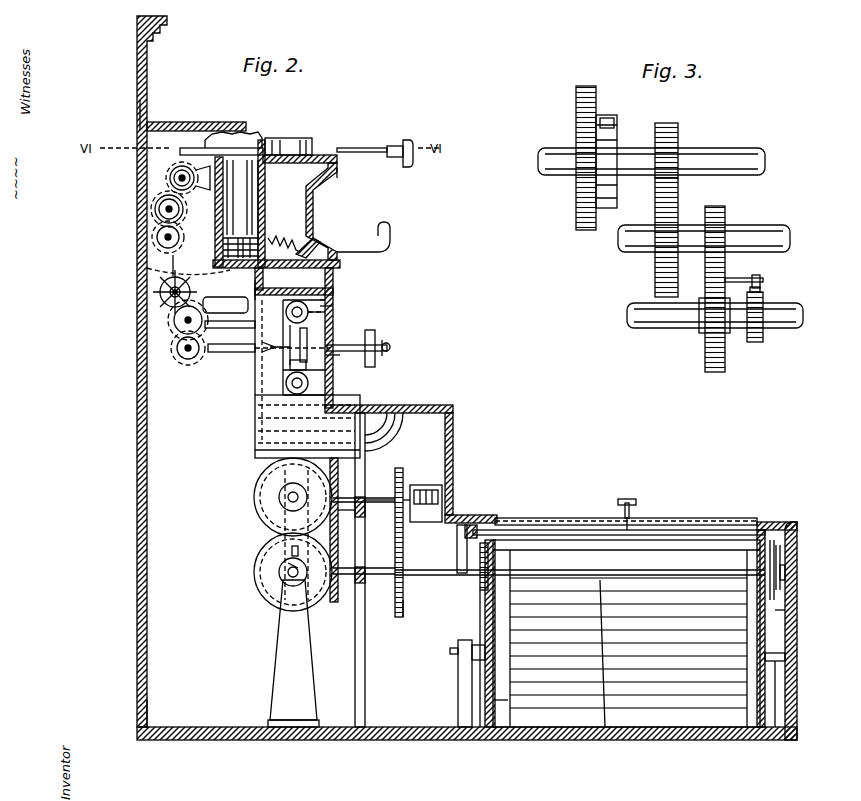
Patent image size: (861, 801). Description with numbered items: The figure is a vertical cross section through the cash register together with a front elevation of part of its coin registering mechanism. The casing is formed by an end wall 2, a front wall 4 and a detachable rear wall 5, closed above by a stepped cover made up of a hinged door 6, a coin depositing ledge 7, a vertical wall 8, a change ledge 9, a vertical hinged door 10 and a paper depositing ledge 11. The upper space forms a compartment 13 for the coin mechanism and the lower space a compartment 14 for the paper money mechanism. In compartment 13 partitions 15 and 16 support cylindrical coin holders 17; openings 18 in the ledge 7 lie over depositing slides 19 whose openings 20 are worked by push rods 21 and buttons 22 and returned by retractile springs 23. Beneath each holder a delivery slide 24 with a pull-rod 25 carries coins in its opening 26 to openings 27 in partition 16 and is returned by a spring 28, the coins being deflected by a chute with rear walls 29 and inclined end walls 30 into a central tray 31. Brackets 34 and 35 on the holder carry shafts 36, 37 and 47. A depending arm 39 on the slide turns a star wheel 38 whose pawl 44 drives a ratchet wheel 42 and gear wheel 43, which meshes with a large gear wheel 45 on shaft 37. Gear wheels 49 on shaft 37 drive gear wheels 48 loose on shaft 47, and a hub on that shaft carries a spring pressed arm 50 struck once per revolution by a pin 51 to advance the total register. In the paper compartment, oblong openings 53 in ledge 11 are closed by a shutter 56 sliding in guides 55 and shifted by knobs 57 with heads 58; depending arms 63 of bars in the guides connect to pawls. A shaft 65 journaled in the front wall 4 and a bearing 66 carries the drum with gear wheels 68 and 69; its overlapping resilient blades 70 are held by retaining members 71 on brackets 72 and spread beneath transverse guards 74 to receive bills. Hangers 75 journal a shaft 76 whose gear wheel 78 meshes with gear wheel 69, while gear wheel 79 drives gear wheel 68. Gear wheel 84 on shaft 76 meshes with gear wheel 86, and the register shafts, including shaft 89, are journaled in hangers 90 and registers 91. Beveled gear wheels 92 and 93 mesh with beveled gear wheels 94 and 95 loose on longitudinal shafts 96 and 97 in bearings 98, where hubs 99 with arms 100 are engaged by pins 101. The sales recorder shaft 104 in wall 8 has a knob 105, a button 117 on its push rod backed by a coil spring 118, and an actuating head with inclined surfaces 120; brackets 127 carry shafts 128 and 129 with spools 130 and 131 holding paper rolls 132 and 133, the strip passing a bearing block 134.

In FIG. 2, the end wall 2 is at (179, 626).
In FIG. 2, the front wall 4 is at (797, 700).
In FIG. 2, the detachable rear wall 5 is at (146, 385).
In FIG. 2, the longitudinal hinged door 6 is at (212, 125).
In FIG. 2, the coin depositing horizontal ledge 7 is at (320, 155).
In FIG. 2, the vertical wall 8 is at (320, 312).
In FIG. 2, the horizontal change ledge 9 is at (415, 405).
In FIG. 2, the vertical hinged door 10 is at (452, 470).
In FIG. 2, the horizontal paper depositing ledge 11 is at (775, 522).
In FIG. 2, the compartment 13 is at (146, 322).
In FIG. 2, the compartment 14 is at (798, 610).
In FIG. 2, the horizontal longitudinal partition 15 is at (338, 172).
In FIG. 2, the horizontal longitudinal partition 16 is at (338, 263).
In FIG. 2, the vertical coin holder 17 is at (258, 205).
In FIG. 2, the opening 18 is at (297, 150).
In FIG. 2, the depositing slide 19 is at (241, 152).
In FIG. 2, the opening 20 is at (284, 142).
In FIG. 2, the push rod 21 is at (373, 150).
In FIG. 2, the button 22 is at (410, 140).
In FIG. 2, the retractile spring 23 is at (211, 142).
In FIG. 2, the delivery slide 24 is at (298, 251).
In FIG. 2, the hook or pull-rod 25 is at (392, 236).
In FIG. 2, the opening 26 is at (255, 278).
In FIG. 2, the opening 27 is at (283, 270).
In FIG. 2, the retractile spring 28 is at (279, 242).
In FIG. 2, the rear wall 29 is at (258, 385).
In FIG. 2, the inclined end wall 30 is at (258, 431).
In FIG. 2, the central pocket or tray 31 is at (382, 430).
In FIG. 2, the bracket 34 is at (200, 176).
In FIG. 2, the bracket 35 is at (197, 238).
In FIG. 2, the shaft 36 is at (174, 181).
In FIG. 3, the shaft 36 is at (740, 153).
In FIG. 2, the shaft 37 is at (166, 209).
In FIG. 3, the shaft 37 is at (769, 233).
In FIG. 2, the star wheel 38 is at (180, 152).
In FIG. 3, the star wheel 38 is at (597, 96).
In FIG. 2, the depending pivoted arm 39 is at (136, 134).
In FIG. 3, the ratchet wheel 42 is at (612, 186).
In FIG. 3, the gear wheel 43 is at (678, 136).
In FIG. 2, the pivoted pawl 44 is at (172, 168).
In FIG. 3, the pivoted pawl 44 is at (610, 131).
In FIG. 2, the large gear wheel 45 is at (152, 211).
In FIG. 3, the large gear wheel 45 is at (678, 206).
In FIG. 2, the longitudinal shaft 47 is at (158, 238).
In FIG. 3, the longitudinal shaft 47 is at (643, 328).
In FIG. 2, the gear wheel 48 is at (158, 241).
In FIG. 3, the gear wheel 48 is at (715, 372).
In FIG. 2, the gear wheel 49 is at (156, 206).
In FIG. 3, the gear wheel 49 is at (726, 211).
In FIG. 3, the pivoted spring pressed arm 50 is at (763, 279).
In FIG. 3, the pin 51 is at (762, 276).
In FIG. 2, the oblong opening 53 is at (704, 518).
In FIG. 2, the depending slotted guide 55 is at (473, 522).
In FIG. 2, the horizontally movable shutter 56 is at (546, 532).
In FIG. 2, the knob 57 is at (632, 513).
In FIG. 2, the loosely mounted head 58 is at (637, 503).
In FIG. 2, the depending arm 63 is at (782, 550).
In FIG. 2, the revoluble shaft 65 is at (775, 705).
In FIG. 2, the bearing 66 is at (462, 702).
In FIG. 2, the gear wheel 68 is at (798, 628).
In FIG. 2, the gear wheel 69 is at (485, 618).
In FIG. 2, the resilient blade 70 is at (600, 728).
In FIG. 2, the retaining member 71 is at (490, 702).
In FIG. 2, the bracket 72 is at (506, 708).
In FIG. 2, the transverse guard 74 is at (549, 548).
In FIG. 2, the depending hanger 75 is at (457, 545).
In FIG. 2, the shaft 76 is at (441, 572).
In FIG. 2, the gear wheel 78 is at (513, 518).
In FIG. 2, the gear wheel 79 is at (758, 530).
In FIG. 2, the gear wheel 84 is at (400, 618).
In FIG. 2, the gear wheel 86 is at (404, 476).
In FIG. 2, the shaft 89 is at (375, 505).
In FIG. 2, the hanger 90 is at (360, 483).
In FIG. 2, the register 91 is at (445, 496).
In FIG. 2, the beveled gear wheel 92 is at (336, 600).
In FIG. 2, the beveled gear wheel 93 is at (339, 518).
In FIG. 2, the beveled gear wheel 94 is at (290, 560).
In FIG. 2, the beveled gear wheel 95 is at (255, 497).
In FIG. 2, the longitudinal shaft 96 is at (265, 605).
In FIG. 2, the longitudinal shaft 97 is at (292, 497).
In FIG. 2, the bearing 98 is at (268, 660).
In FIG. 2, the hub 99 is at (285, 582).
In FIG. 2, the arm 100 is at (292, 568).
In FIG. 2, the pin 101 is at (288, 550).
In FIG. 2, the shaft 104 is at (350, 352).
In FIG. 2, the knob 105 is at (377, 335).
In FIG. 2, the button 117 is at (392, 347).
In FIG. 2, the coil spring 118 is at (385, 353).
In FIG. 2, the inclined converging surface 120 is at (267, 346).
In FIG. 2, the bracket 127 is at (345, 305).
In FIG. 2, the shaft 128 is at (340, 300).
In FIG. 2, the shaft 129 is at (294, 385).
In FIG. 2, the spool 130 is at (310, 312).
In FIG. 2, the spool 131 is at (290, 377).
In FIG. 2, the roll of paper 132 is at (340, 292).
In FIG. 2, the roll of paper 133 is at (312, 385).
In FIG. 2, the bearing block 134 is at (335, 356).